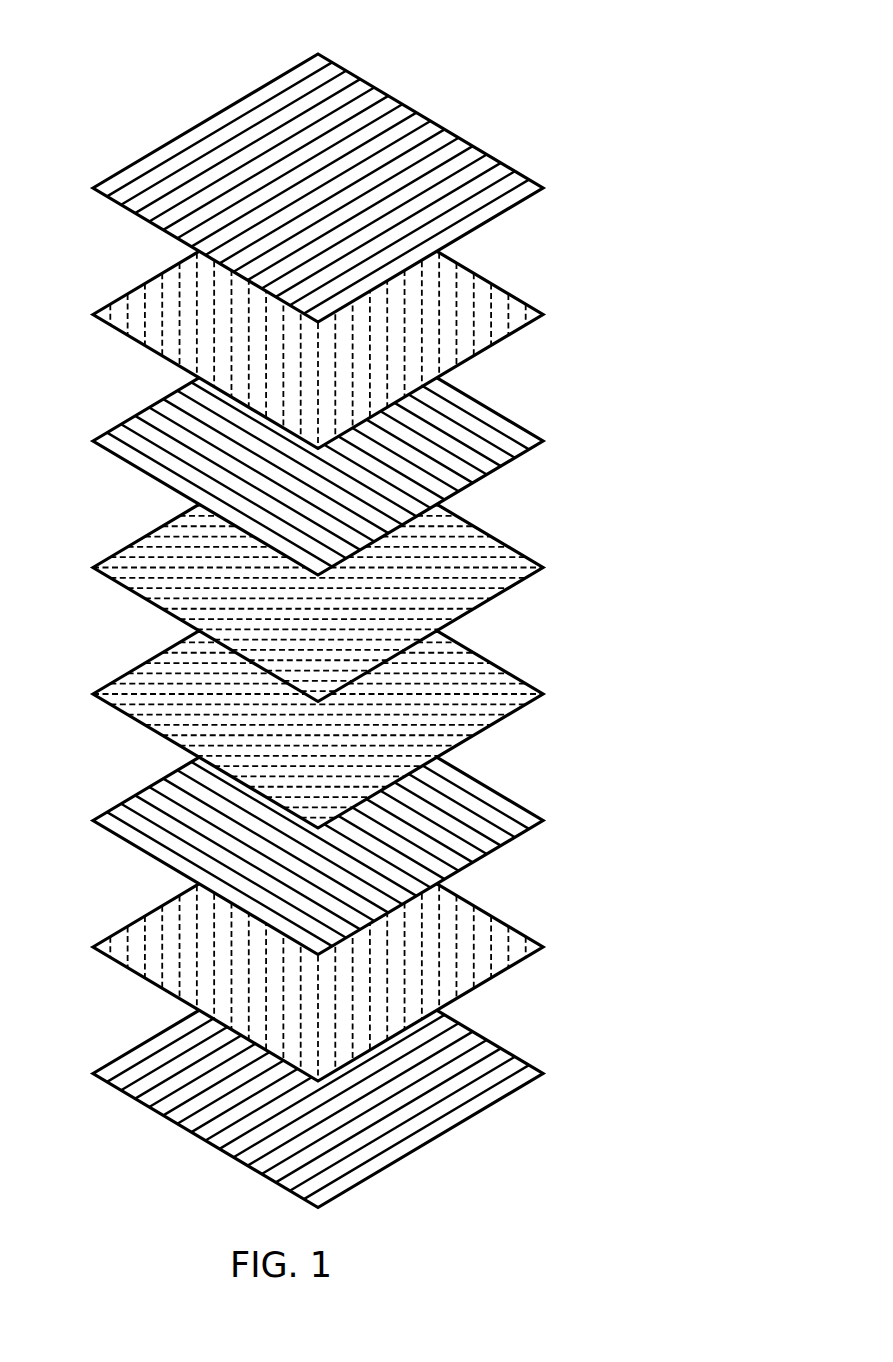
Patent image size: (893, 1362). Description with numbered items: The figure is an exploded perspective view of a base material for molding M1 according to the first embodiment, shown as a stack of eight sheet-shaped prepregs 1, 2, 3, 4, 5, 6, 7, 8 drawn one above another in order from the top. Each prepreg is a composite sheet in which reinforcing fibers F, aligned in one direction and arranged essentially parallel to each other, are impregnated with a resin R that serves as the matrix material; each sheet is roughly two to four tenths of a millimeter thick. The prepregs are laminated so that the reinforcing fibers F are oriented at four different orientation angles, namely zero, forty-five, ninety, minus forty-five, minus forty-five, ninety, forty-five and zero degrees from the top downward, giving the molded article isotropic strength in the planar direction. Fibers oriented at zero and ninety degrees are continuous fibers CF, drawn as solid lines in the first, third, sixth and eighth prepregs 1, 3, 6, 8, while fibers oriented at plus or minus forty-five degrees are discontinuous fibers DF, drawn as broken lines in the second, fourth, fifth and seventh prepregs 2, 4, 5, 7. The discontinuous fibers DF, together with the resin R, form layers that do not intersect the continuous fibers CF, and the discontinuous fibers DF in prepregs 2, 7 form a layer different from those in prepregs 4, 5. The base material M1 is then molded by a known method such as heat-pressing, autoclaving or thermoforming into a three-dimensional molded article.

The base material for molding M1 is at (500, 80).
The prepreg 1 is at (316, 188).
The prepreg 2 is at (312, 315).
The prepreg 3 is at (312, 441).
The prepreg 4 is at (308, 568).
The prepreg 5 is at (308, 694).
The prepreg 6 is at (312, 821).
The prepreg 7 is at (312, 947).
The prepreg 8 is at (316, 1074).
The continuous fibers CF is at (325, 187).
The discontinuous fibers DF is at (328, 315).
The reinforcing fibers F is at (316, 1073).
The resin R is at (306, 441).